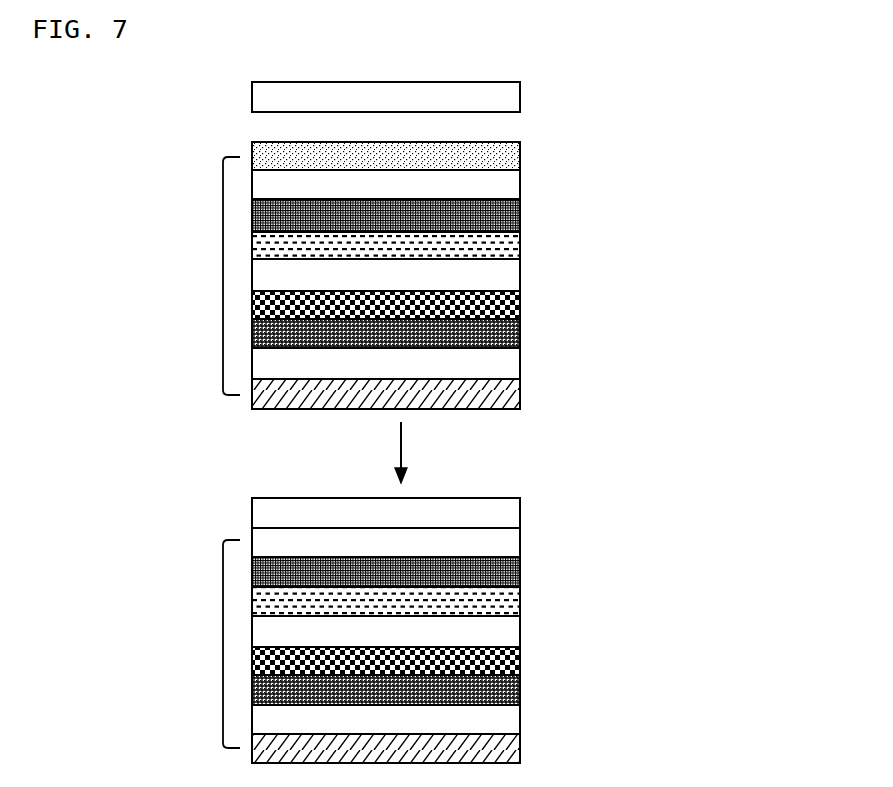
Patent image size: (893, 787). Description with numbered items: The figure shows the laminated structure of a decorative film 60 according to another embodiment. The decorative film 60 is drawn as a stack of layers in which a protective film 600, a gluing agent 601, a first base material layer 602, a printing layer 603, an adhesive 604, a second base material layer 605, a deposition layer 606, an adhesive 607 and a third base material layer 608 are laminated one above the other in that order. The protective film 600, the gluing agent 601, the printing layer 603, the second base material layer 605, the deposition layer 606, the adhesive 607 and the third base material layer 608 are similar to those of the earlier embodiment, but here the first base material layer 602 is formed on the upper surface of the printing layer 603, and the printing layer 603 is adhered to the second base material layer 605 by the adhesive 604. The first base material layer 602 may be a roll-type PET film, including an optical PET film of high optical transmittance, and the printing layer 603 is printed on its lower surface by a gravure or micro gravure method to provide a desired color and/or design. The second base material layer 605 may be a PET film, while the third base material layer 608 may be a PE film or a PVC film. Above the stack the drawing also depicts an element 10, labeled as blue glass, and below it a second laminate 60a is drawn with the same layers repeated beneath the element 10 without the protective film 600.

The blue glass 10 is at (521, 92).
The decorative film 60 is at (223, 260).
The decorative sheet after protective film removal 60a is at (223, 649).
The protective film 600 is at (521, 154).
The gluing agent 601 is at (521, 182).
The first base material layer 602 is at (521, 212).
The printing layer 603 is at (521, 242).
The adhesive 604 is at (521, 272).
The second base material layer 605 is at (521, 302).
The deposition layer 606 is at (521, 332).
The adhesive 607 is at (521, 362).
The third base material layer 608 is at (521, 392).